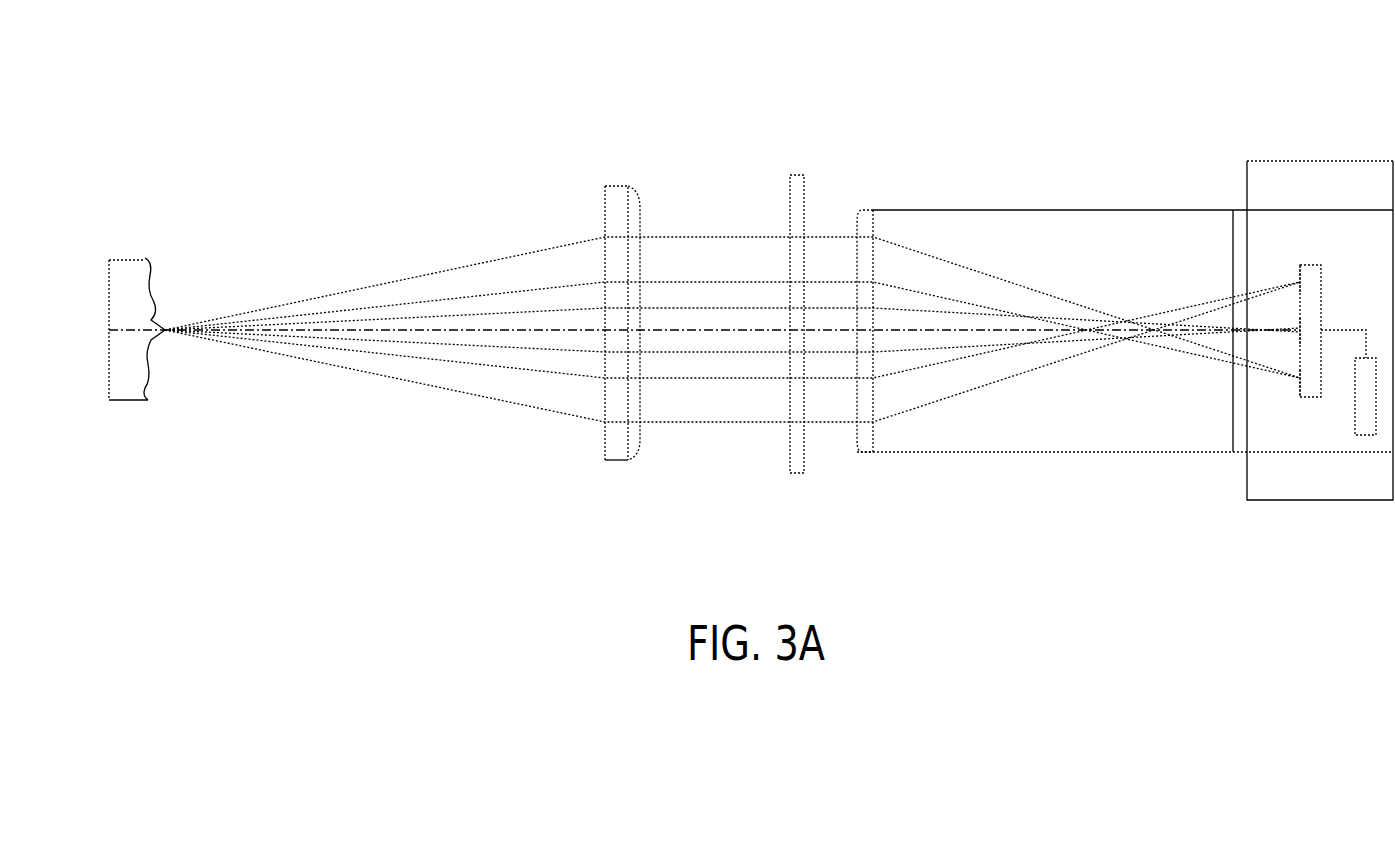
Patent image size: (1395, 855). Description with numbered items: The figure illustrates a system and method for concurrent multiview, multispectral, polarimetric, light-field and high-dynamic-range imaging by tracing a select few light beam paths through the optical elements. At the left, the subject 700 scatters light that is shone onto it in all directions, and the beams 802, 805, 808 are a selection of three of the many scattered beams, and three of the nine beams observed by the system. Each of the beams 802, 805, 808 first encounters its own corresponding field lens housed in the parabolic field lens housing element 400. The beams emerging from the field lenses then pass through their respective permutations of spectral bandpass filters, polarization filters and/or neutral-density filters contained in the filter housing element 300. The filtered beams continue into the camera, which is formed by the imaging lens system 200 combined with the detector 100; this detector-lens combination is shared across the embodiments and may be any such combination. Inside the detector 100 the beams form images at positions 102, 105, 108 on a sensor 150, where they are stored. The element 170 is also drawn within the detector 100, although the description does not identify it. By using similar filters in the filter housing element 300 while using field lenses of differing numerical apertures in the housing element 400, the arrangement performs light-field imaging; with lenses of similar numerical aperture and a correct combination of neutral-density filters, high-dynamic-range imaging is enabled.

The subject 700 is at (132, 268).
The beam 802 is at (418, 289).
The beam 805 is at (477, 325).
The beam 808 is at (453, 391).
The parabolic field lens housing element 400 is at (616, 191).
The filter housing element 300 is at (798, 178).
The imaging lens system 200 is at (1112, 231).
The detector 100 is at (1323, 181).
The sensor 150 is at (1307, 283).
The position on sensor 108 is at (1298, 284).
The position on sensor 105 is at (1299, 334).
The position on sensor 102 is at (1300, 385).
The processor / electronics 170 is at (1366, 414).